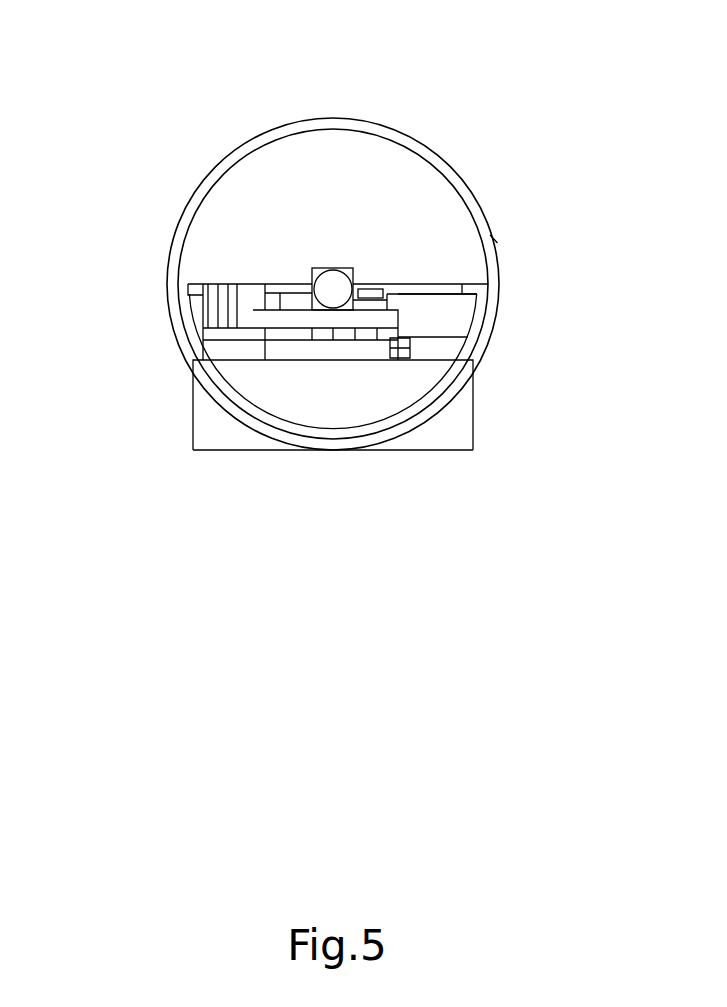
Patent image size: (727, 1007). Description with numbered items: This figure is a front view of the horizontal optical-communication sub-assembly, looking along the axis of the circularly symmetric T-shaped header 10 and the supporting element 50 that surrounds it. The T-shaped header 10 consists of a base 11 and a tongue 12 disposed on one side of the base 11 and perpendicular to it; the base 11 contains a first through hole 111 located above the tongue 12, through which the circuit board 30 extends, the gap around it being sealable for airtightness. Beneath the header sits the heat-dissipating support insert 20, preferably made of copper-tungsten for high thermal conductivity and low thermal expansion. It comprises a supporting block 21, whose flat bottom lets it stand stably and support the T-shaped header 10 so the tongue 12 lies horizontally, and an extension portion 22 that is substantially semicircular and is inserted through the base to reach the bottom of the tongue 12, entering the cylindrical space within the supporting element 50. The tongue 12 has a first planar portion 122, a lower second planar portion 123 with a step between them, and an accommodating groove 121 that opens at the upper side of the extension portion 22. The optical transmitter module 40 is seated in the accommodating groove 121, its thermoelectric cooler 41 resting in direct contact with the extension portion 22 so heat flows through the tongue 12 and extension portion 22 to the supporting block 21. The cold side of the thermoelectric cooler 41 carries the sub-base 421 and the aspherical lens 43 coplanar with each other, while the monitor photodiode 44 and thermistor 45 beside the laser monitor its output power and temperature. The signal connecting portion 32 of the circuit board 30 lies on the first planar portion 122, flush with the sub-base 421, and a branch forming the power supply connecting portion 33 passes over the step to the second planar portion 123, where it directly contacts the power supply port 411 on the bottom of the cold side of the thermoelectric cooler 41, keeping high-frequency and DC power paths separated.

The T-shaped header 10 is at (427, 136).
The base 11 is at (440, 212).
The first through hole 111 is at (193, 292).
The tongue 12 is at (210, 345).
The accommodating groove 121 is at (403, 347).
The first planar portion 122 is at (440, 297).
The second planar portion 123 is at (437, 338).
The heat-dissipating support insert 20 is at (476, 418).
The supporting block 21 is at (432, 440).
The extension portion 22 is at (325, 395).
The circuit board 30 is at (465, 287).
The signal connecting portion 32 is at (292, 284).
The power supply connecting portion 33 is at (242, 327).
The optical transmitter module 40 is at (393, 296).
The thermoelectric cooler 41 is at (303, 318).
The power supply port 411 is at (263, 327).
The sub-base 421 is at (296, 298).
The aspherical lens 43 is at (333, 288).
The monitor photodiode 44 is at (355, 285).
The thermistor 45 is at (368, 288).
The supporting element 50 is at (500, 243).